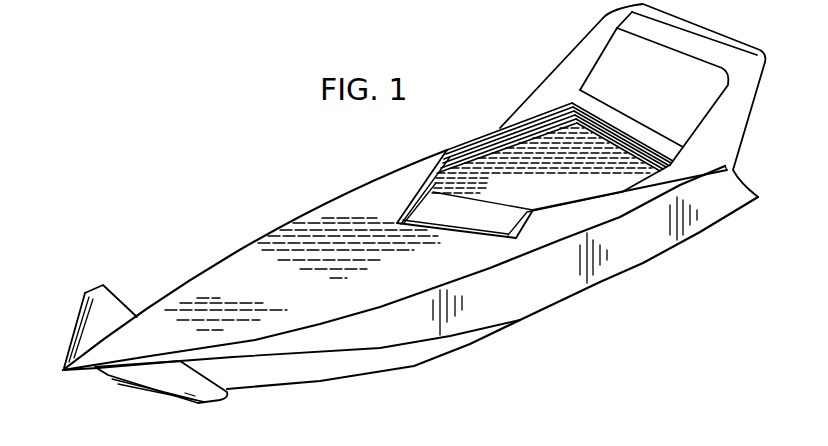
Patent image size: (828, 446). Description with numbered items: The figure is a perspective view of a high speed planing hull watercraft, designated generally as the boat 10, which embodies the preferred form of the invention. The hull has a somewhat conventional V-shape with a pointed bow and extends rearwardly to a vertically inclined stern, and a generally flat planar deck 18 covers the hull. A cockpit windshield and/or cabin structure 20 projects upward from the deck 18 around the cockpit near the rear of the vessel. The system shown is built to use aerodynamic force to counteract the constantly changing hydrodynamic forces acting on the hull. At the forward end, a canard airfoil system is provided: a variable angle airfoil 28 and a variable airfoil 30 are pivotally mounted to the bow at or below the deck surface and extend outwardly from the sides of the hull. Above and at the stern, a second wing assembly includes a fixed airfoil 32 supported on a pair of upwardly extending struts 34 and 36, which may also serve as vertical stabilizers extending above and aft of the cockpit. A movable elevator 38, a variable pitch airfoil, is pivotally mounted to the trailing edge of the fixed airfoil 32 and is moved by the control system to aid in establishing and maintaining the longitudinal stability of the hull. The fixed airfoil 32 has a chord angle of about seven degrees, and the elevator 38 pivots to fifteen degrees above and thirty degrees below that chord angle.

The boat 10 is at (244, 156).
The deck 18 is at (348, 210).
The cockpit windshield and/or cabin structure 20 is at (486, 218).
The variable angle airfoil 28 is at (172, 377).
The variable airfoil 30 is at (110, 300).
The fixed airfoil 32 is at (672, 42).
The strut 34 is at (738, 113).
The strut 36 is at (572, 48).
The movable elevator 38 is at (688, 27).